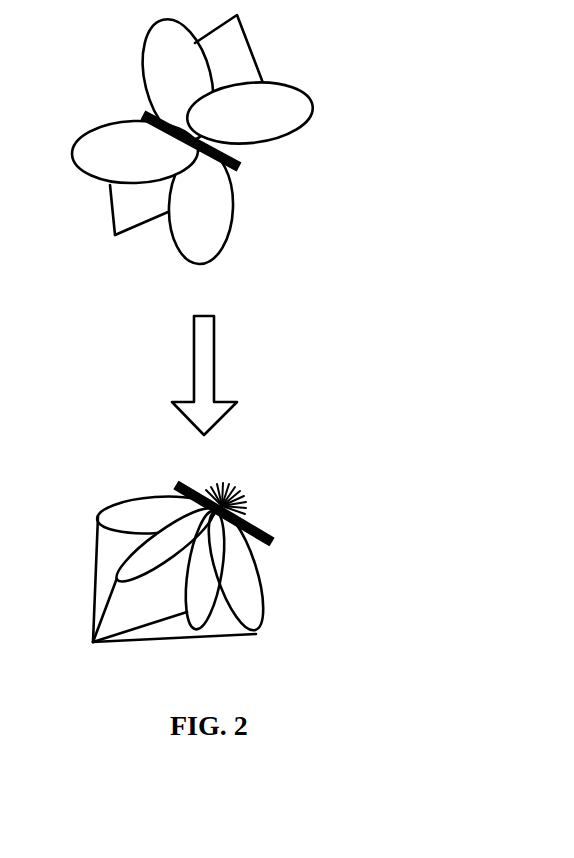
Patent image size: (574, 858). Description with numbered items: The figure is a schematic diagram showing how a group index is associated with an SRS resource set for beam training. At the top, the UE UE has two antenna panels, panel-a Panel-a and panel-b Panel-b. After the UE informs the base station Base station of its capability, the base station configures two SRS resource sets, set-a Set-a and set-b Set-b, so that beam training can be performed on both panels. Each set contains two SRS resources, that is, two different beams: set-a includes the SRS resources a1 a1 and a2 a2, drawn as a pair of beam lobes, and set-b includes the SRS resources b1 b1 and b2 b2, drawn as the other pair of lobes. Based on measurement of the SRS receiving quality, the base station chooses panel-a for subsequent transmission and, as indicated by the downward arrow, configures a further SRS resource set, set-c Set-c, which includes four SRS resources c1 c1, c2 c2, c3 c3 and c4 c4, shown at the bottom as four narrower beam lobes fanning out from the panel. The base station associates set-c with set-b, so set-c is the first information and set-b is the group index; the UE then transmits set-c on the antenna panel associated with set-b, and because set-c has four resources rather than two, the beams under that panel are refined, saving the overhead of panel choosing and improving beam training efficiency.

The UE end UE is at (99, 95).
The SRS resource a1 is at (178, 80).
The SRS resource a2 is at (250, 113).
The SRS resource b1 is at (135, 152).
The SRS resource b2 is at (201, 207).
The SRS resource set-a Set-a is at (244, 45).
The SRS resource set-b Set-b is at (121, 229).
The panel-a Panel-a is at (250, 163).
The panel-b Panel-b is at (241, 189).
The base station Base station is at (113, 469).
The SRS resource c1 is at (156, 515).
The SRS resource c2 is at (165, 545).
The SRS resource c3 is at (205, 570).
The SRS resource c4 is at (236, 570).
The SRS resource set-c Set-c is at (159, 599).